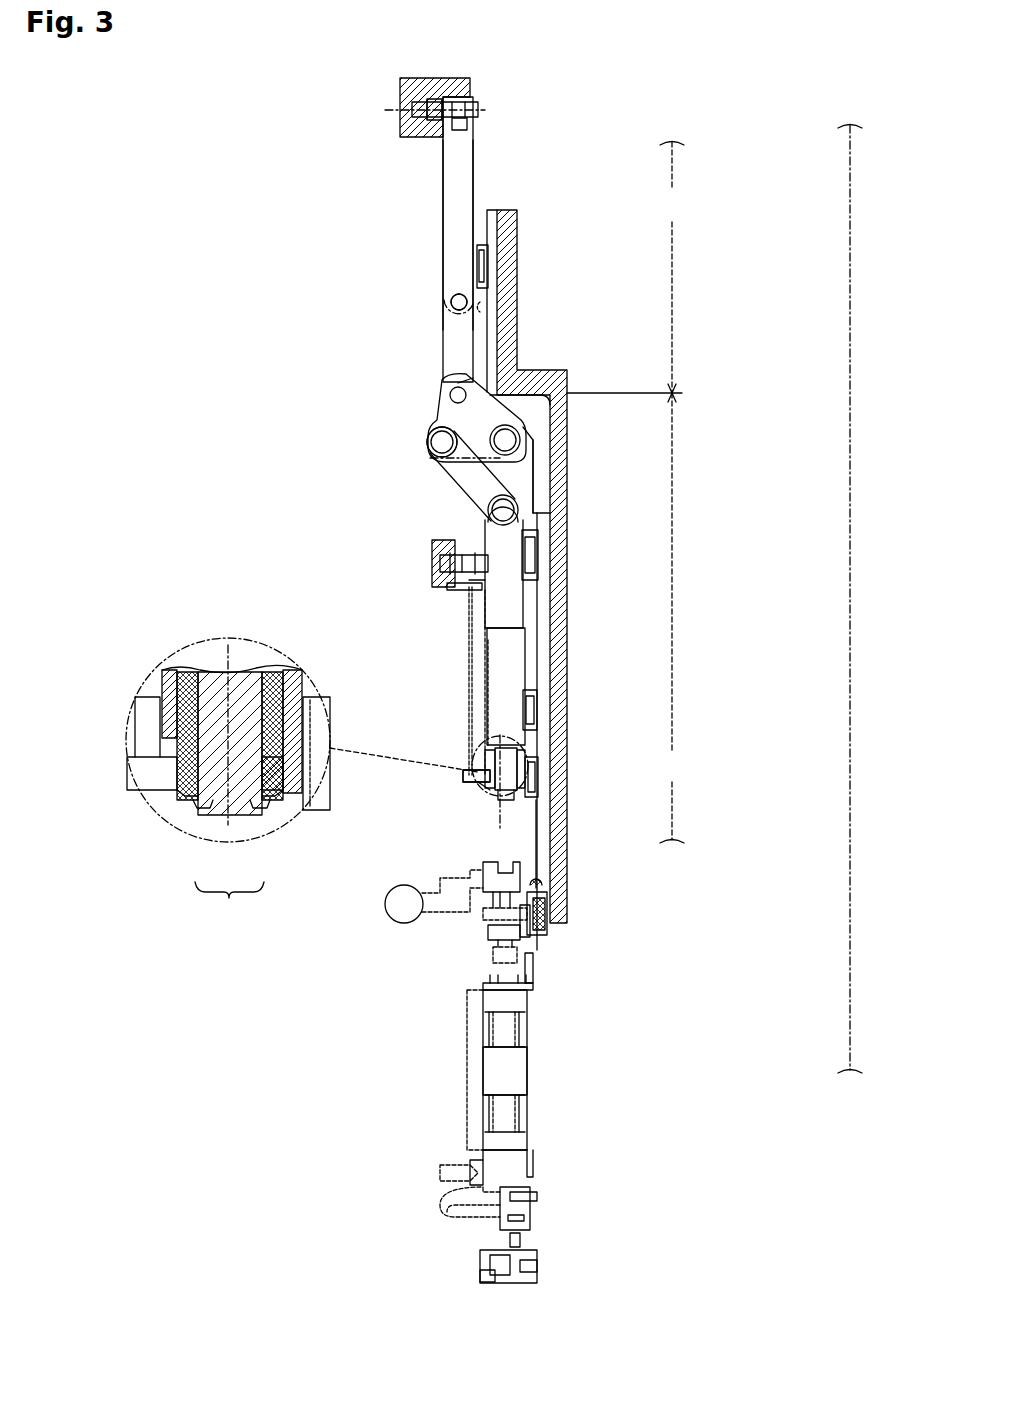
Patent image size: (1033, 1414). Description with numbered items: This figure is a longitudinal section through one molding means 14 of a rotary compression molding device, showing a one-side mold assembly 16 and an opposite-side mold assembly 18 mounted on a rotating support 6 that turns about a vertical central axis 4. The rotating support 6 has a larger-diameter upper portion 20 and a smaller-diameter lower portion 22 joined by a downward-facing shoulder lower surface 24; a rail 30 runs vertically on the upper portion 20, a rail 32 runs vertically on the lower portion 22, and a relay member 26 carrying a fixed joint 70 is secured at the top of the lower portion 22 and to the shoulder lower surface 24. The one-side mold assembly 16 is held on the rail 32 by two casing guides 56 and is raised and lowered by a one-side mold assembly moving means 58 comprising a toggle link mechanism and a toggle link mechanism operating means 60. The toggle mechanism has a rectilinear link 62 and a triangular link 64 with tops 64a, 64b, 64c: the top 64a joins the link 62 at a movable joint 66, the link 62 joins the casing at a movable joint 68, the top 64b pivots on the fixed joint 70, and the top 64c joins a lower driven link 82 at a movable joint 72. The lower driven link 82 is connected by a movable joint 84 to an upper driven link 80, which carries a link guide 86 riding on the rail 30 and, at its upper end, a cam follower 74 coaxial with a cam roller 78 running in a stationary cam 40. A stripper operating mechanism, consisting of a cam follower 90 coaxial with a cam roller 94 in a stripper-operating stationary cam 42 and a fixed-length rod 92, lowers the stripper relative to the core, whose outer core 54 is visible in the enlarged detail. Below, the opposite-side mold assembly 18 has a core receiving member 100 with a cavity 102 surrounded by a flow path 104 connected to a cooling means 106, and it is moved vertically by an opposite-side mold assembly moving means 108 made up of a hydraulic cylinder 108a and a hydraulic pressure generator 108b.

The central axis 4 is at (850, 172).
The rotating support 6 is at (618, 272).
The molding means 14 is at (330, 192).
The one-side mold assembly 16 is at (455, 776).
The opposite-side mold assembly 18 is at (375, 882).
The upper portion 20 is at (626, 268).
The lower portion 22 is at (672, 618).
The shoulder lower surface 24 is at (535, 398).
The relay member 26 is at (540, 450).
The rail 30 is at (487, 308).
The rail 32 is at (538, 603).
The stationary cam 40 is at (412, 103).
The stripper-operating stationary cam 42 is at (448, 562).
The outer core 54 is at (200, 803).
The casing guide 56 is at (538, 558).
The one-side mold assembly moving means 58 is at (365, 440).
The toggle link mechanism operating means 60 is at (440, 295).
The link 62 is at (460, 477).
The link 64 is at (452, 413).
The top 64a is at (428, 447).
The top 64b is at (518, 440).
The top 64c is at (468, 378).
The movable joint 66 is at (440, 437).
The movable joint 68 is at (488, 505).
The fixed joint 70 is at (535, 470).
The movable joint 72 is at (450, 392).
The cam follower 74 is at (480, 103).
The cam roller 78 is at (434, 99).
The upper driven link 80 is at (452, 169).
The lower driven link 82 is at (458, 333).
The movable joint 84 is at (458, 297).
The link guide 86 is at (489, 258).
The cam follower 90 is at (468, 550).
The fixed-length rod 92 is at (485, 730).
The cam roller 94 is at (455, 590).
The core receiving member 100 is at (540, 864).
The cavity 102 is at (500, 862).
The flow path 104 is at (470, 872).
The cooling means 106 is at (404, 904).
The opposite-side mold assembly moving means 108 is at (540, 1027).
The hydraulic cylinder 108a is at (527, 1072).
The hydraulic pressure generator 108b is at (530, 1222).